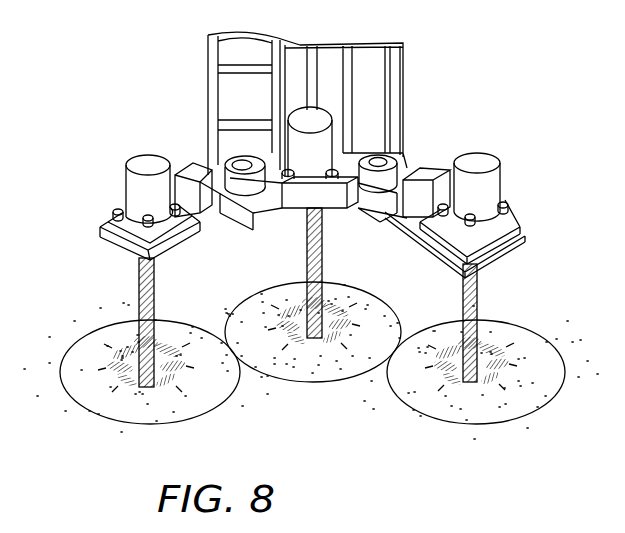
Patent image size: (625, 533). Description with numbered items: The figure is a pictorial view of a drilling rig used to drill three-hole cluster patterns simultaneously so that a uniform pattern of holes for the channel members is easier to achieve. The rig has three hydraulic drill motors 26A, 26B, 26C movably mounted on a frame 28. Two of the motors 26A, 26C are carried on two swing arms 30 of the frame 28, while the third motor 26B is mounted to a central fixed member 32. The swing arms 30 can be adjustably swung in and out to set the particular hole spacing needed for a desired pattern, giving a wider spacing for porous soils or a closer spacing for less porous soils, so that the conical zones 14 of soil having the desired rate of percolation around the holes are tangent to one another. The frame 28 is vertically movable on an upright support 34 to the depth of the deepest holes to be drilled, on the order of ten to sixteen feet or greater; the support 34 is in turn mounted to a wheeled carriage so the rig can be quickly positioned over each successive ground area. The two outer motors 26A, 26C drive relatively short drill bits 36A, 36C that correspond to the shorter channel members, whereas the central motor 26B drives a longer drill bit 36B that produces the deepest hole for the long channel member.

The conical zones 14 is at (100, 322).
The hydraulic drill motor 26A is at (125, 173).
The hydraulic drill motor 26B is at (330, 133).
The hydraulic drill motor 26C is at (498, 178).
The frame 28 is at (237, 233).
The swing arms 30 is at (178, 165).
The central fixed member 32 is at (330, 203).
The upright support 34 is at (205, 56).
The drill bit 36A is at (135, 283).
The drill bit 36B is at (305, 262).
The drill bit 36C is at (483, 282).